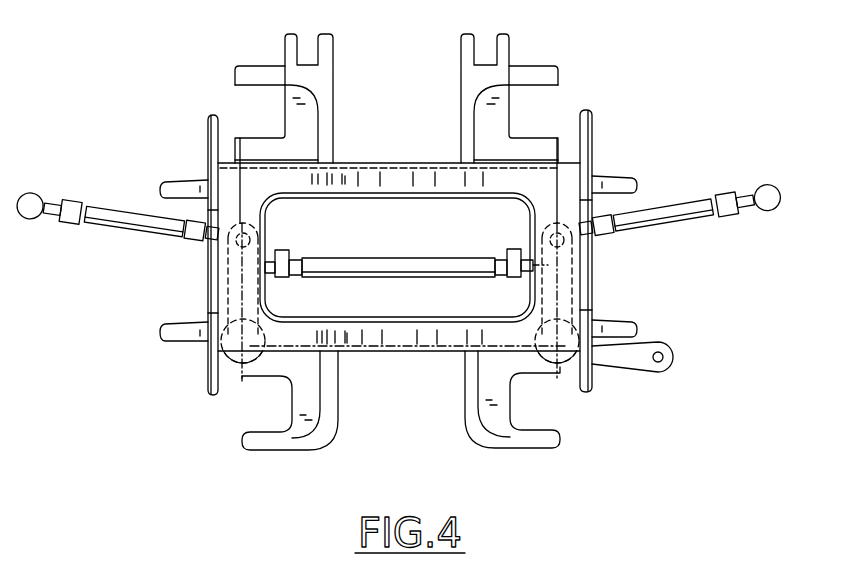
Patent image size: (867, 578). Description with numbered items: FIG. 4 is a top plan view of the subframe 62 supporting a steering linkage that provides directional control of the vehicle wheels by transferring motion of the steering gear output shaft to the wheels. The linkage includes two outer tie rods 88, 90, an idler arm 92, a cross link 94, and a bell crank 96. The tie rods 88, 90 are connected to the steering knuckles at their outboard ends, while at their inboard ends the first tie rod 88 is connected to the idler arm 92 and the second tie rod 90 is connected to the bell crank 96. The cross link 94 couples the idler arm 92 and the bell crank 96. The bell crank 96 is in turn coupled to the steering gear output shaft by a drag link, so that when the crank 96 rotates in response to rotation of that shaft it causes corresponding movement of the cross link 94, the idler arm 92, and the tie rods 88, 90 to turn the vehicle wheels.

The frame assembly 62 is at (402, 372).
The outer tie rod 88 is at (127, 226).
The outer tie rod 90 is at (683, 207).
The idler arm 92 is at (262, 308).
The cross link 94 is at (385, 268).
The bell crank 96 is at (587, 288).